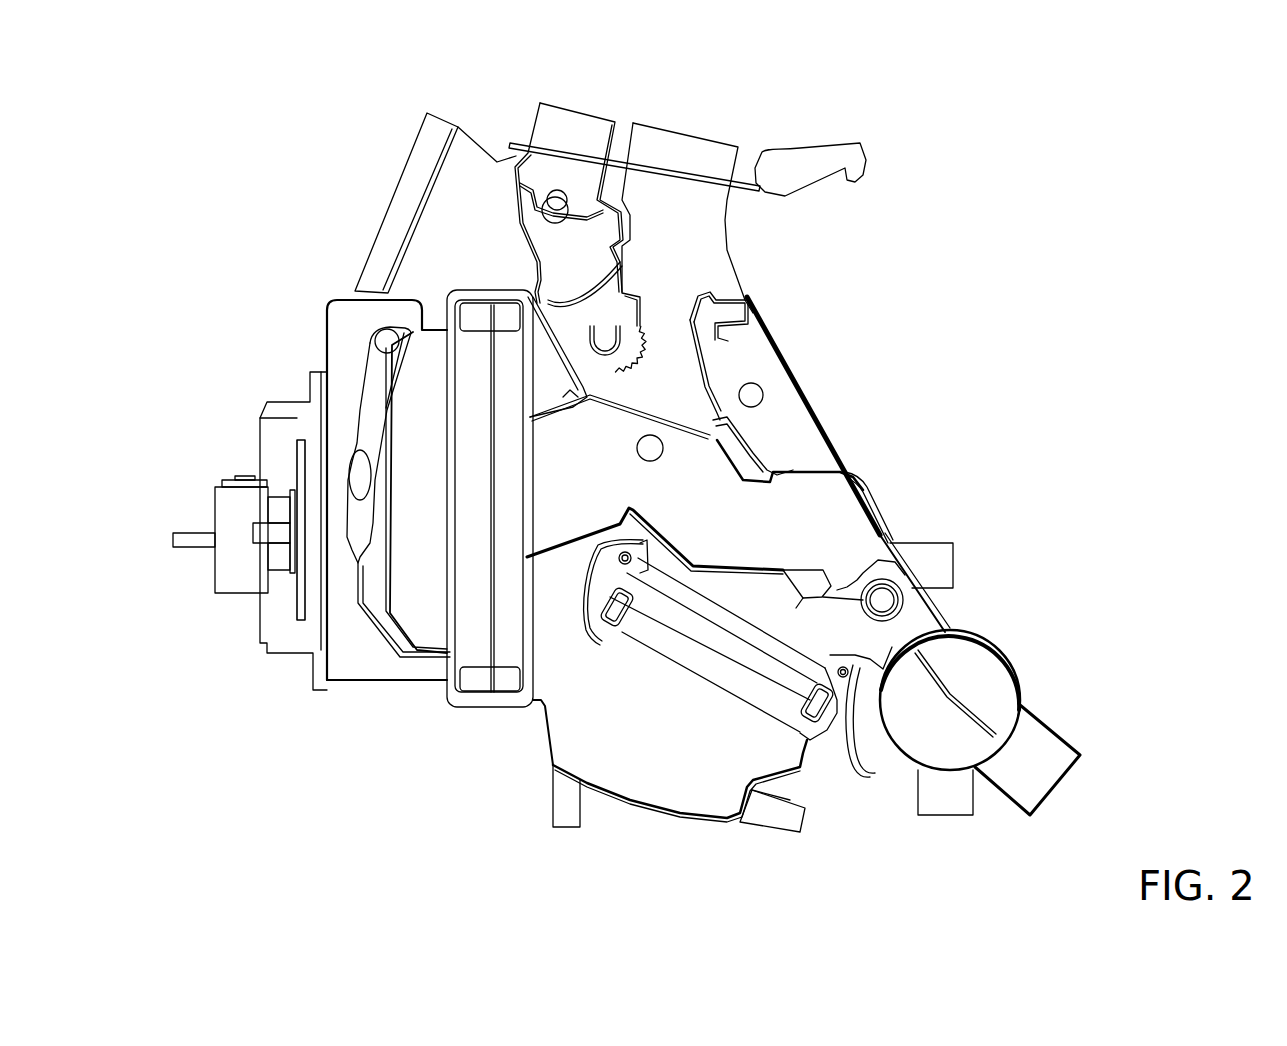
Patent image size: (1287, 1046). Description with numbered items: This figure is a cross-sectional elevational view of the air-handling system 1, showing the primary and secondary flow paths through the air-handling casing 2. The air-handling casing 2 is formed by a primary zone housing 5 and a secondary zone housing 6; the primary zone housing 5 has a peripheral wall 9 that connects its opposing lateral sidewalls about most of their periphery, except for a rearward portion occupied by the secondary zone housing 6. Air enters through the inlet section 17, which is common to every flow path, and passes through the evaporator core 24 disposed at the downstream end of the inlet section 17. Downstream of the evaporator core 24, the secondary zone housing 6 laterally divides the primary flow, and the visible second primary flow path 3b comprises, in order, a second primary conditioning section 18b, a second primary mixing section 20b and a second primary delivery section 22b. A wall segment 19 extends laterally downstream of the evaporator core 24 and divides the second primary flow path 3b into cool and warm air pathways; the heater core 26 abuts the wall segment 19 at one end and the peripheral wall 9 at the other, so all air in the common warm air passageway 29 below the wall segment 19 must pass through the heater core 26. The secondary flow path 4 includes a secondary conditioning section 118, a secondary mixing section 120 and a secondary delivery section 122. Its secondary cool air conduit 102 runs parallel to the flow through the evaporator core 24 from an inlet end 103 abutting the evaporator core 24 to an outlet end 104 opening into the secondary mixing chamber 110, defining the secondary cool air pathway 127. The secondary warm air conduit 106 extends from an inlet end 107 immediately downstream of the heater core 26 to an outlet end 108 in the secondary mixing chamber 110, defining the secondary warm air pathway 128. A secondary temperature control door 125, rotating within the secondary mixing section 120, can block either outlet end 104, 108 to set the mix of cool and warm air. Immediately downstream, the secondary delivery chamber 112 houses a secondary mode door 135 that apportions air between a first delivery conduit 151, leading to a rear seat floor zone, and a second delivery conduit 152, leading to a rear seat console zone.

The air-handling system 1 is at (225, 120).
The air-handling casing 2 is at (760, 305).
The second primary flow path 3b is at (657, 335).
The secondary flow path 4 is at (542, 525).
The primary zone housing 5 is at (528, 118).
The secondary zone housing 6 is at (808, 462).
The peripheral wall 9 is at (630, 800).
The inlet section 17 is at (437, 493).
The second primary conditioning section 18b is at (765, 620).
The wall segment 19 is at (530, 592).
The second primary mixing section 20b is at (671, 390).
The second primary delivery section 22b is at (679, 212).
The evaporator core 24 is at (470, 587).
The heater core 26 is at (723, 673).
The common warm air passageway 29 is at (678, 784).
The secondary cool air conduit 102 is at (720, 403).
The inlet end 103 is at (530, 508).
The outlet end 104 is at (847, 507).
The secondary warm air conduit 106 is at (880, 652).
The inlet end 107 is at (740, 770).
The outlet end 108 is at (907, 710).
The secondary mixing chamber 110 is at (976, 671).
The secondary delivery chamber 112 is at (1028, 723).
The secondary conditioning section 118 is at (860, 525).
The secondary mixing section 120 is at (923, 622).
The secondary delivery section 122 is at (996, 694).
The secondary temperature control door 125 is at (884, 597).
The secondary cool air pathway 127 is at (542, 462).
The secondary warm air pathway 128 is at (825, 650).
The secondary mode door 135 is at (947, 688).
The first delivery conduit 151 is at (943, 807).
The second delivery conduit 152 is at (1037, 788).